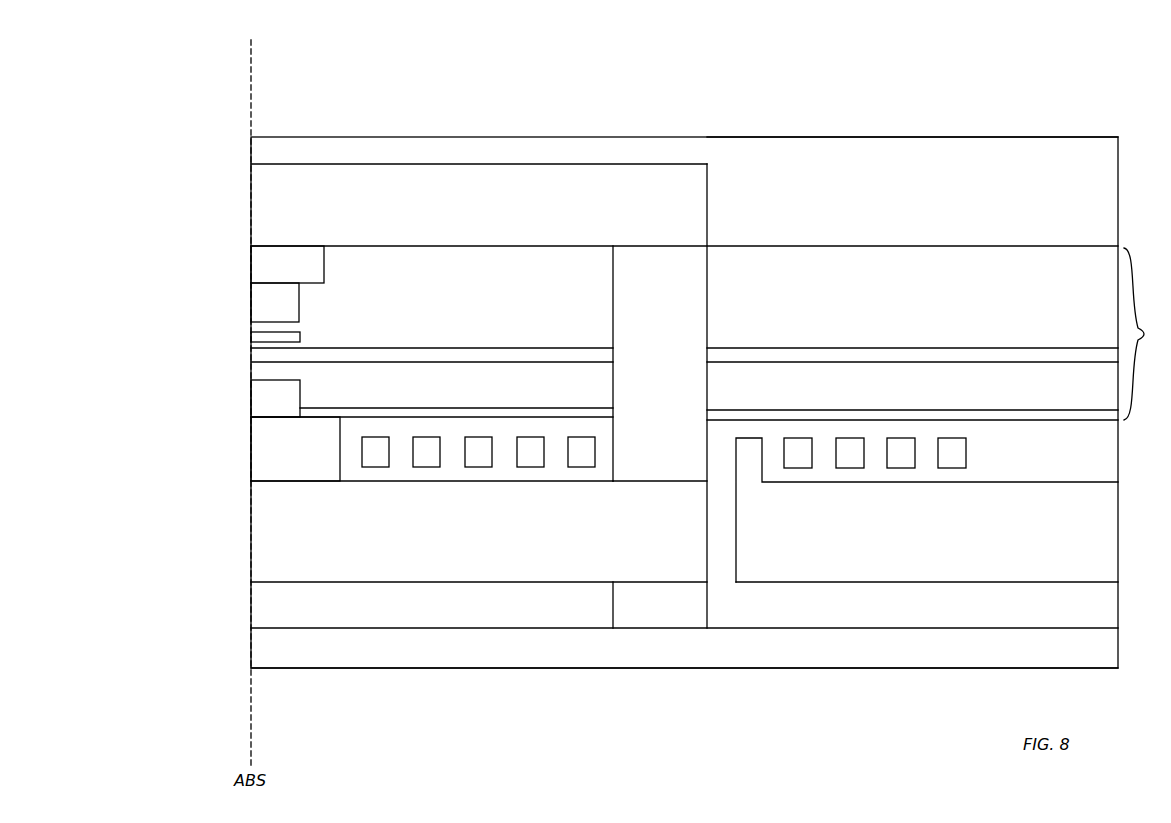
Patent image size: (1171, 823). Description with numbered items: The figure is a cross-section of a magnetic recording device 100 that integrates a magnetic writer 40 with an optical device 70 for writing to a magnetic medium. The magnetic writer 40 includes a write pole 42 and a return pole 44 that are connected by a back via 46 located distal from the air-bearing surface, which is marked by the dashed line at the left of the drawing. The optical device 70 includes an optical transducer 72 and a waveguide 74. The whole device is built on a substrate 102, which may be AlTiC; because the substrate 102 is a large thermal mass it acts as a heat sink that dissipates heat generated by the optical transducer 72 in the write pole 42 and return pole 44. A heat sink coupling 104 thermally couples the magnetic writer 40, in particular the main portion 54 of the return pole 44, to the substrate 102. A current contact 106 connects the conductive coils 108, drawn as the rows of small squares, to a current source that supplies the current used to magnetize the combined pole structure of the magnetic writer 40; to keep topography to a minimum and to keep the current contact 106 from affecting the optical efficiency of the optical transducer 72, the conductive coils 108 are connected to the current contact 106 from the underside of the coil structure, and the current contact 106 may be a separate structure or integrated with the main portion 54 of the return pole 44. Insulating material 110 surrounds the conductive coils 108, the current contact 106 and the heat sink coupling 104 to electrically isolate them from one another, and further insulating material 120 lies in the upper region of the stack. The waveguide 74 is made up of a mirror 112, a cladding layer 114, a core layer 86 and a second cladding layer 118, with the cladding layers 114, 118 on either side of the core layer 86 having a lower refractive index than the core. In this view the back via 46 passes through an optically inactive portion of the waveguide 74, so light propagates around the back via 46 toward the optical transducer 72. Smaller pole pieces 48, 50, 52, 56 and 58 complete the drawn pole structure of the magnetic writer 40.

The magnetic recording device 100 is at (353, 96).
The magnetic writer 40 is at (717, 199).
The write pole 42 is at (249, 253).
The return pole 44 is at (248, 463).
The back via 46 is at (676, 370).
The top yoke 48 is at (497, 211).
The write pole tip 50 is at (300, 271).
The shield 52 is at (286, 308).
The main portion of return pole 54 is at (497, 539).
The bottom return pole 56 is at (300, 454).
The bottom shield 58 is at (286, 405).
The optical device 70 is at (244, 350).
The optical transducer 72 is at (257, 333).
The waveguide 74 is at (1146, 334).
The core layer 86 is at (502, 359).
The substrate 102 is at (689, 655).
The heat sink coupling 104 is at (681, 615).
The current contact 106 is at (933, 543).
The conductive coils 108 is at (472, 460).
The insulating material 110 is at (454, 613).
The mirror 112 is at (541, 410).
The cladding layer 114 is at (472, 393).
The cladding layer 118 is at (472, 309).
The insulating material 120 is at (909, 206).